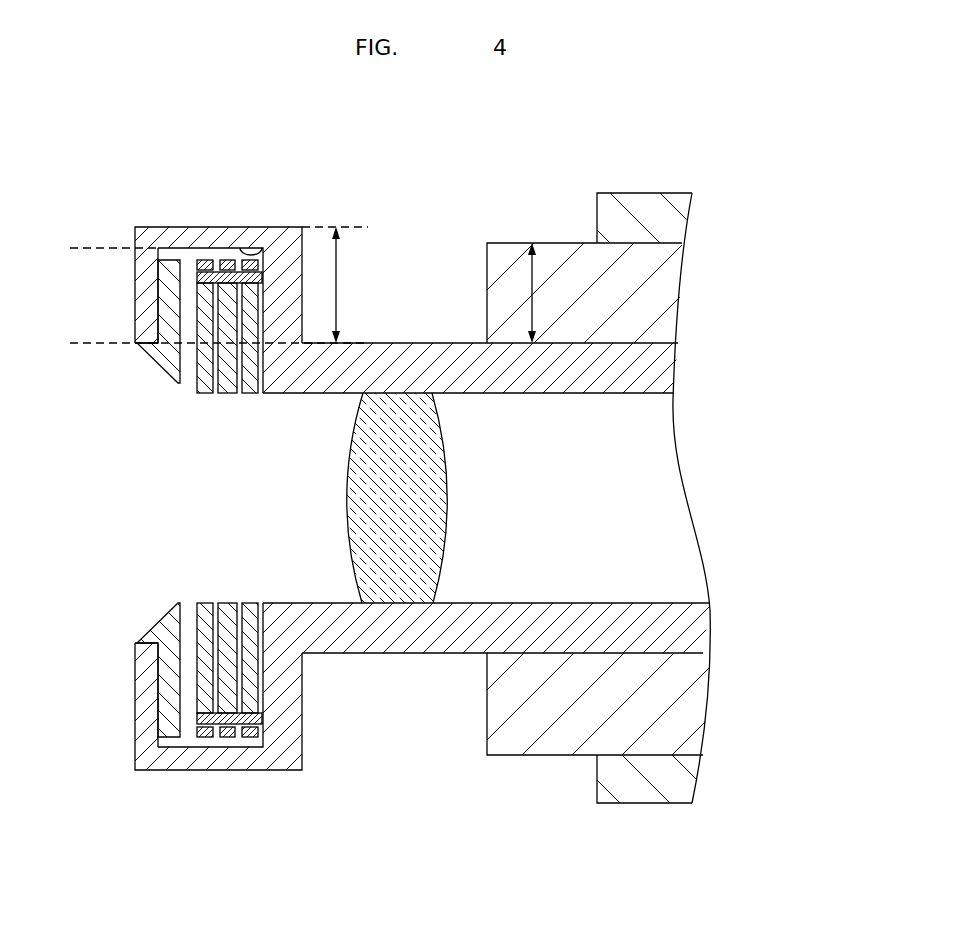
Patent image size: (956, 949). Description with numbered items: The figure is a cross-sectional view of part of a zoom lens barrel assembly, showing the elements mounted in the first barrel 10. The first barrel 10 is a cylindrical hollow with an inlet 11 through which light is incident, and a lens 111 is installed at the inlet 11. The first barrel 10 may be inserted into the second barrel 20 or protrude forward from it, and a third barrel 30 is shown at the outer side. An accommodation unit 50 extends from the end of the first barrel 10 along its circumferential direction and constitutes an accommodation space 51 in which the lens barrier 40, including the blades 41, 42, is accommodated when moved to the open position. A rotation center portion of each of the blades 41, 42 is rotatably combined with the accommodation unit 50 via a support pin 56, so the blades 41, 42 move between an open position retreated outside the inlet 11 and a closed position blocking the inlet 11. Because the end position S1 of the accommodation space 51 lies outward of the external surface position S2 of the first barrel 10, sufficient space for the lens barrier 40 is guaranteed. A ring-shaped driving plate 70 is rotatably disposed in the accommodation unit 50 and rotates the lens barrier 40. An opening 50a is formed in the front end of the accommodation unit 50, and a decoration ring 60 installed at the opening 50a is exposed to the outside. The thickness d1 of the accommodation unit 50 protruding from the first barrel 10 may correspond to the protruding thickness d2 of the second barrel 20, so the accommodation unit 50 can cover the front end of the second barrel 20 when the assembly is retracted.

The first barrel 10 is at (411, 312).
The inlet 11 is at (317, 603).
The lens 111 is at (410, 577).
The second barrel 20 is at (515, 263).
The third barrel 30 is at (637, 210).
The lens barrier 40 is at (153, 498).
The blade 41 is at (226, 392).
The blade 42 is at (202, 392).
The accommodation unit 50 is at (232, 235).
The opening 50a is at (135, 343).
The accommodation space 51 is at (268, 245).
The support pin 56 is at (208, 277).
The decoration ring 60 is at (170, 360).
The driving plate 70 is at (250, 393).
The end position of the accommodation space S1 is at (84, 248).
The external surface position of the first barrel S2 is at (97, 343).
The thickness of the accommodation unit d1 is at (337, 285).
The protruding thickness of the second barrel d2 is at (546, 293).